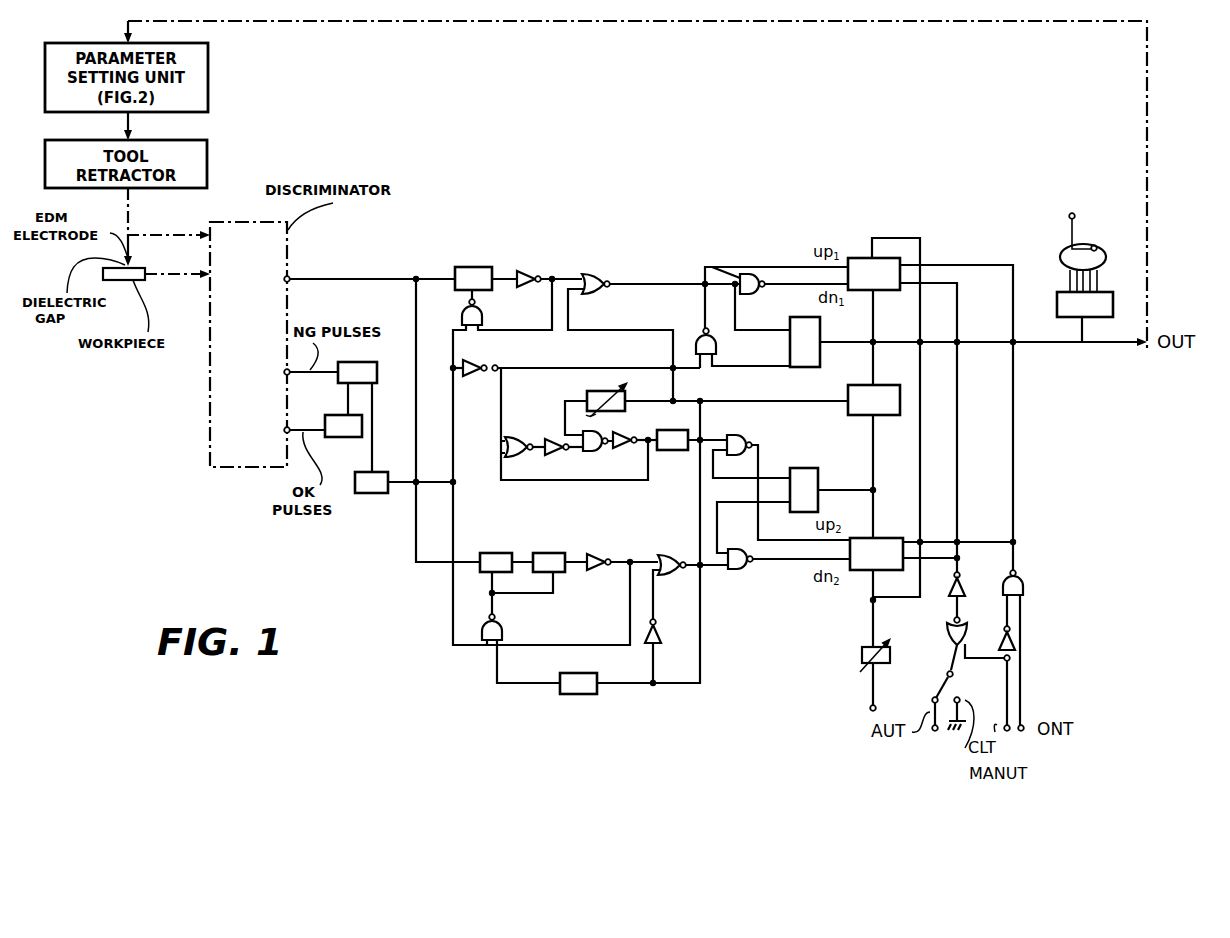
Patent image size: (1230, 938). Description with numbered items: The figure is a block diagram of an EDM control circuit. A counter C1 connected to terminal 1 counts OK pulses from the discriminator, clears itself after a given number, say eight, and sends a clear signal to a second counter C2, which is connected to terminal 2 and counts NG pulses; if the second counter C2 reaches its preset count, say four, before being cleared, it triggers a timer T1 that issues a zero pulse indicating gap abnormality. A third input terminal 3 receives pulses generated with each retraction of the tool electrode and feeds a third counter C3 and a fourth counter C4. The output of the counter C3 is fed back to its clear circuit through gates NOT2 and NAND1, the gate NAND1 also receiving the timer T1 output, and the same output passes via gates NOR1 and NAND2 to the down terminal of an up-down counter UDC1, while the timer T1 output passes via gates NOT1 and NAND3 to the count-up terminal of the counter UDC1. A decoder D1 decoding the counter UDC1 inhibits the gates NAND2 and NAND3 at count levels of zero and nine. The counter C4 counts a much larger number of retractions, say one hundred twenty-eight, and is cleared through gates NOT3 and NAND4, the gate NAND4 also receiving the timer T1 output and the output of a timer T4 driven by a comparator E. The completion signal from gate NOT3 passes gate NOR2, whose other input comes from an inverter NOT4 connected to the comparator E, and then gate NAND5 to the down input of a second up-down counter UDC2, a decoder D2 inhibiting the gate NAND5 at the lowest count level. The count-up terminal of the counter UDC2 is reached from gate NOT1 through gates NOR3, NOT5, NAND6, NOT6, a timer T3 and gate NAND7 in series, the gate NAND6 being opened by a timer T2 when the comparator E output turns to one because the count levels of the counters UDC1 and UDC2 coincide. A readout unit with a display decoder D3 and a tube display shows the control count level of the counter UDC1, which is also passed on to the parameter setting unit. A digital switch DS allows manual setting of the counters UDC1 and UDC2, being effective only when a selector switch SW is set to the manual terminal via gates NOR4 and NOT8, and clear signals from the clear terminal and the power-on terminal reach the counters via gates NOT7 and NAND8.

The terminal 1 is at (280, 430).
The terminal 2 is at (280, 372).
The third input terminal 3 is at (280, 279).
The counter C1 is at (343, 426).
The second counter C2 is at (357, 373).
The third counter C3 is at (473, 278).
The fourth counter C4 is at (483, 556).
The timer T1 is at (371, 483).
The timer T2 is at (608, 398).
The timer T3 is at (672, 440).
The timer T4 is at (578, 684).
The NAND gate NAND1 is at (460, 310).
The NAND gate NAND2 is at (730, 276).
The NAND gate NAND3 is at (724, 358).
The NAND gate NAND4 is at (524, 627).
The NAND gate NAND5 is at (728, 570).
The NAND gate NAND6 is at (578, 452).
The NAND gate NAND7 is at (745, 443).
The NAND gate NAND8 is at (1046, 647).
The NOT gate NOT1 is at (466, 368).
The NOT gate NOT2 is at (547, 266).
The NOT gate NOT3 is at (584, 558).
The inverter NOT4 is at (668, 629).
The NOT gate NOT5 is at (567, 452).
The NOT gate NOT6 is at (633, 436).
The NOT gate NOT7 is at (1012, 634).
The NOT gate NOT8 is at (968, 590).
The NOR gate NOR1 is at (578, 278).
The NOR gate NOR2 is at (687, 576).
The NOR gate NOR3 is at (506, 442).
The NOR gate NOR4 is at (935, 640).
The up-down counter UDC1 is at (874, 274).
The up-down counter UDC2 is at (876, 554).
The decoder D1 is at (805, 342).
The decoder D2 is at (804, 490).
The display decoder D3 is at (1085, 277).
The comparator E is at (874, 400).
The digital switch DS is at (858, 653).
The selector switch SW is at (929, 700).